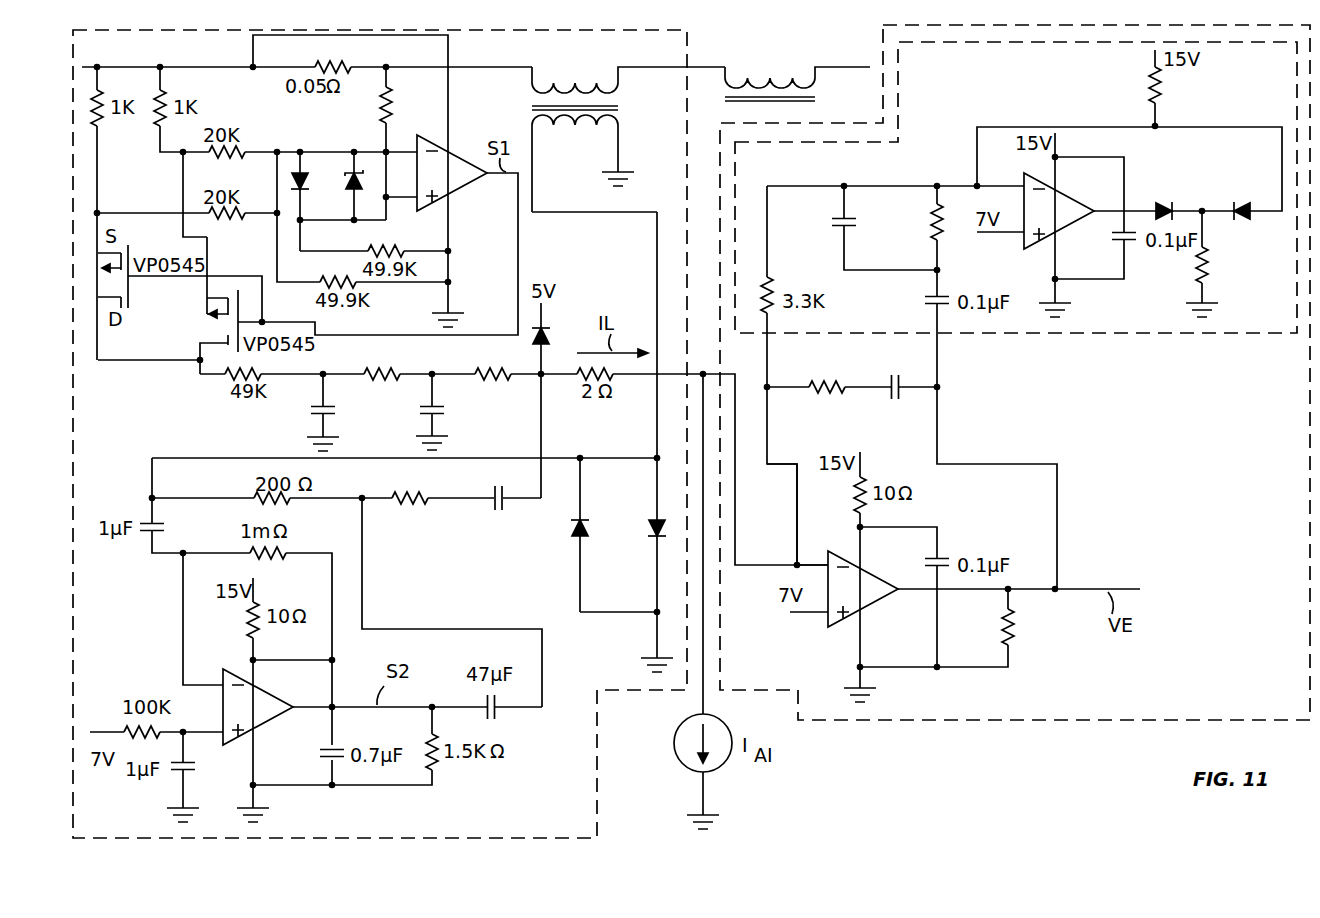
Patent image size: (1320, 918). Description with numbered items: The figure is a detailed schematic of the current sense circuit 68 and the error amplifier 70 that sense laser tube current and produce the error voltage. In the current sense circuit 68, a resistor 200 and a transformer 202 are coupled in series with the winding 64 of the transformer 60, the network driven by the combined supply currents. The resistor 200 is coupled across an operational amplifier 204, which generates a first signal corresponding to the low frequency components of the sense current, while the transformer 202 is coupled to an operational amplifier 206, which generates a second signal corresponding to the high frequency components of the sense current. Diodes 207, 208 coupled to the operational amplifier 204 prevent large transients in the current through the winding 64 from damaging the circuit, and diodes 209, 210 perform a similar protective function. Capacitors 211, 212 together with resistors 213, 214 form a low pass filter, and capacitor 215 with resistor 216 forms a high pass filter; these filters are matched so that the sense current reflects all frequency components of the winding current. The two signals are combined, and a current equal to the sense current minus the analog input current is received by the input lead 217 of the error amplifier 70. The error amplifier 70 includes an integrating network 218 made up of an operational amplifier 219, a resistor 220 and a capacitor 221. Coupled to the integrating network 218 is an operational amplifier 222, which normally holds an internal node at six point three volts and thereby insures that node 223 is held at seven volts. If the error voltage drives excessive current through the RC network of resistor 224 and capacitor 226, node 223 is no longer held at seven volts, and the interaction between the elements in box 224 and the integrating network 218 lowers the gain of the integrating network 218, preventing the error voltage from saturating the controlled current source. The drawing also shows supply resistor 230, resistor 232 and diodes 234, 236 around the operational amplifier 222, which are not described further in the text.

The transformer 60 is at (822, 100).
The winding 64 is at (776, 78).
The current sense circuit 68 is at (530, 812).
The error amplifier 70 is at (1224, 677).
The resistor 200 is at (336, 66).
The transformer 202 is at (620, 110).
The operational amplifier 204 is at (463, 190).
The operational amplifier 206 is at (270, 728).
The diode 207 is at (296, 160).
The diode 208 is at (350, 160).
The diode 209 is at (574, 540).
The diode 210 is at (654, 540).
The capacitor 211 is at (313, 421).
The capacitor 212 is at (446, 420).
The resistor 213 is at (366, 371).
The resistor 214 is at (476, 370).
The capacitor 215 is at (490, 494).
The resistor 216 is at (408, 510).
The input lead 217 is at (757, 563).
The integrating network 218 is at (1030, 656).
The operational amplifier 219 is at (880, 605).
The resistor 220 is at (830, 400).
The capacitor 221 is at (898, 402).
The operational amplifier 222 is at (1072, 225).
The node 223 is at (818, 184).
The resistor 224 is at (930, 240).
The capacitor 226 is at (836, 234).
The resistor 230 is at (1148, 86).
The resistor 232 is at (1215, 268).
The diode 234 is at (1238, 196).
The diode 236 is at (1165, 196).